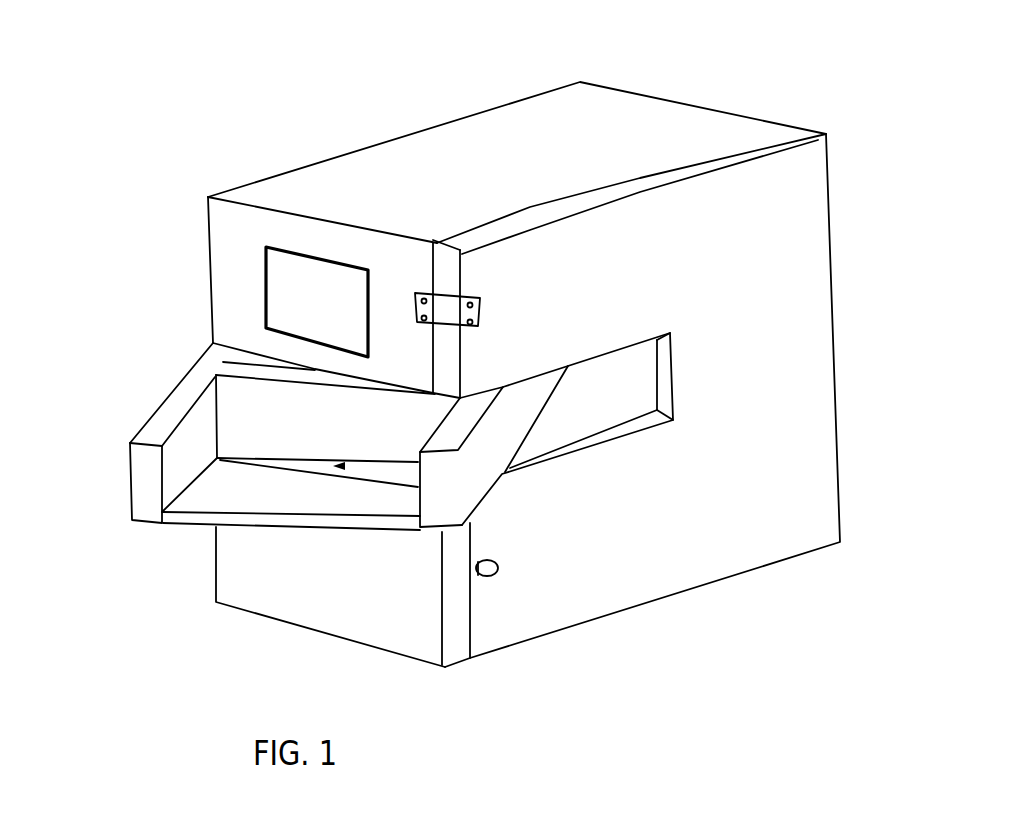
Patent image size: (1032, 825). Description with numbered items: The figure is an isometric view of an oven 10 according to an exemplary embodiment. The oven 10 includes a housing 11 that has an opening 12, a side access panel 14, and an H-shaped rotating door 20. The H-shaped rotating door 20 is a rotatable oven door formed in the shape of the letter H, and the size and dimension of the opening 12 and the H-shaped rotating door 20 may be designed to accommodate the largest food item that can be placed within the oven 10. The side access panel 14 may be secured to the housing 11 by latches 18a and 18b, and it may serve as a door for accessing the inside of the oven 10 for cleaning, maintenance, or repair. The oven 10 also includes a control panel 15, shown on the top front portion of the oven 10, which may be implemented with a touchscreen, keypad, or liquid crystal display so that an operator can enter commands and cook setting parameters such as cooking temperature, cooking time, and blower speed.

The oven 10 is at (406, 96).
The housing 11 is at (672, 127).
The side access panel 14 is at (750, 205).
The control panel 15 is at (306, 296).
The latch 18a is at (448, 312).
The latch 18b is at (500, 567).
The H-shaped rotating door 20 is at (170, 413).
The opening 12 is at (617, 384).